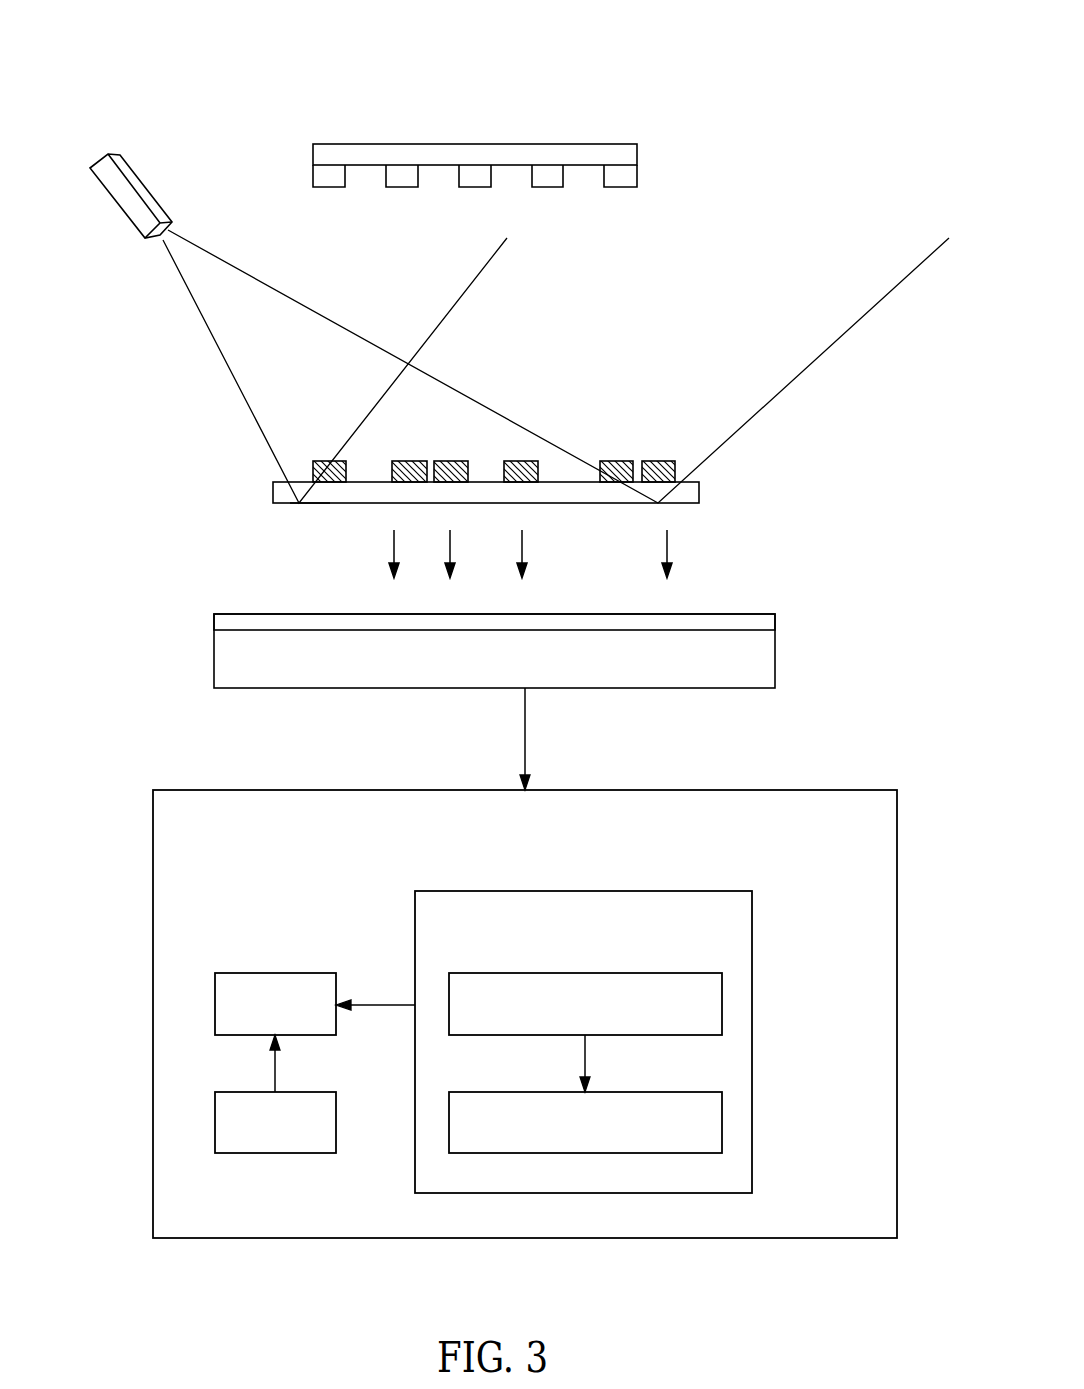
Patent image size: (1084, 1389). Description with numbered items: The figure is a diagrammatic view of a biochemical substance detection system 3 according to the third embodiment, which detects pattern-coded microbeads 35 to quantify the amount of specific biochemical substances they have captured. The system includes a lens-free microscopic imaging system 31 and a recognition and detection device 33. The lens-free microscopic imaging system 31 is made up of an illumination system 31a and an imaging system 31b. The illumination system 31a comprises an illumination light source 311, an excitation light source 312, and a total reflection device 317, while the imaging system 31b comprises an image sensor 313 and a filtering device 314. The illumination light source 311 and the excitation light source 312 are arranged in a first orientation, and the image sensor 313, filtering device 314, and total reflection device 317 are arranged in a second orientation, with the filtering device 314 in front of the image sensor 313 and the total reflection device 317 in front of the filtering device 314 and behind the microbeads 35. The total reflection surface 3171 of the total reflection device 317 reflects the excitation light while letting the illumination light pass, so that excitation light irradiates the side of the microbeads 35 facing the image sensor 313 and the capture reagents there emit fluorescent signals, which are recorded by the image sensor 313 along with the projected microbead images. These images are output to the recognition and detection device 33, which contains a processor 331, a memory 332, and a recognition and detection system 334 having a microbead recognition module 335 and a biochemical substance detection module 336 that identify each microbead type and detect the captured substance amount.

The biochemical substance detection system 3 is at (543, 31).
The lens-free microscopic imaging system 31 is at (115, 416).
The illumination system 31a is at (232, 414).
The imaging system 31b is at (210, 660).
The illumination light source 311 is at (572, 152).
The excitation light source 312 is at (135, 197).
The image sensor 313 is at (755, 673).
The filtering device 314 is at (752, 624).
The total reflection device 317 is at (280, 497).
The total reflection surface 3171 is at (323, 505).
The microbead 35 is at (664, 460).
The recognition and detection device 33 is at (782, 790).
The processor 331 is at (275, 973).
The memory 332 is at (275, 1153).
The recognition and detection system 334 is at (582, 891).
The microbead recognition module 335 is at (722, 1003).
The biochemical substance detection module 336 is at (722, 1122).